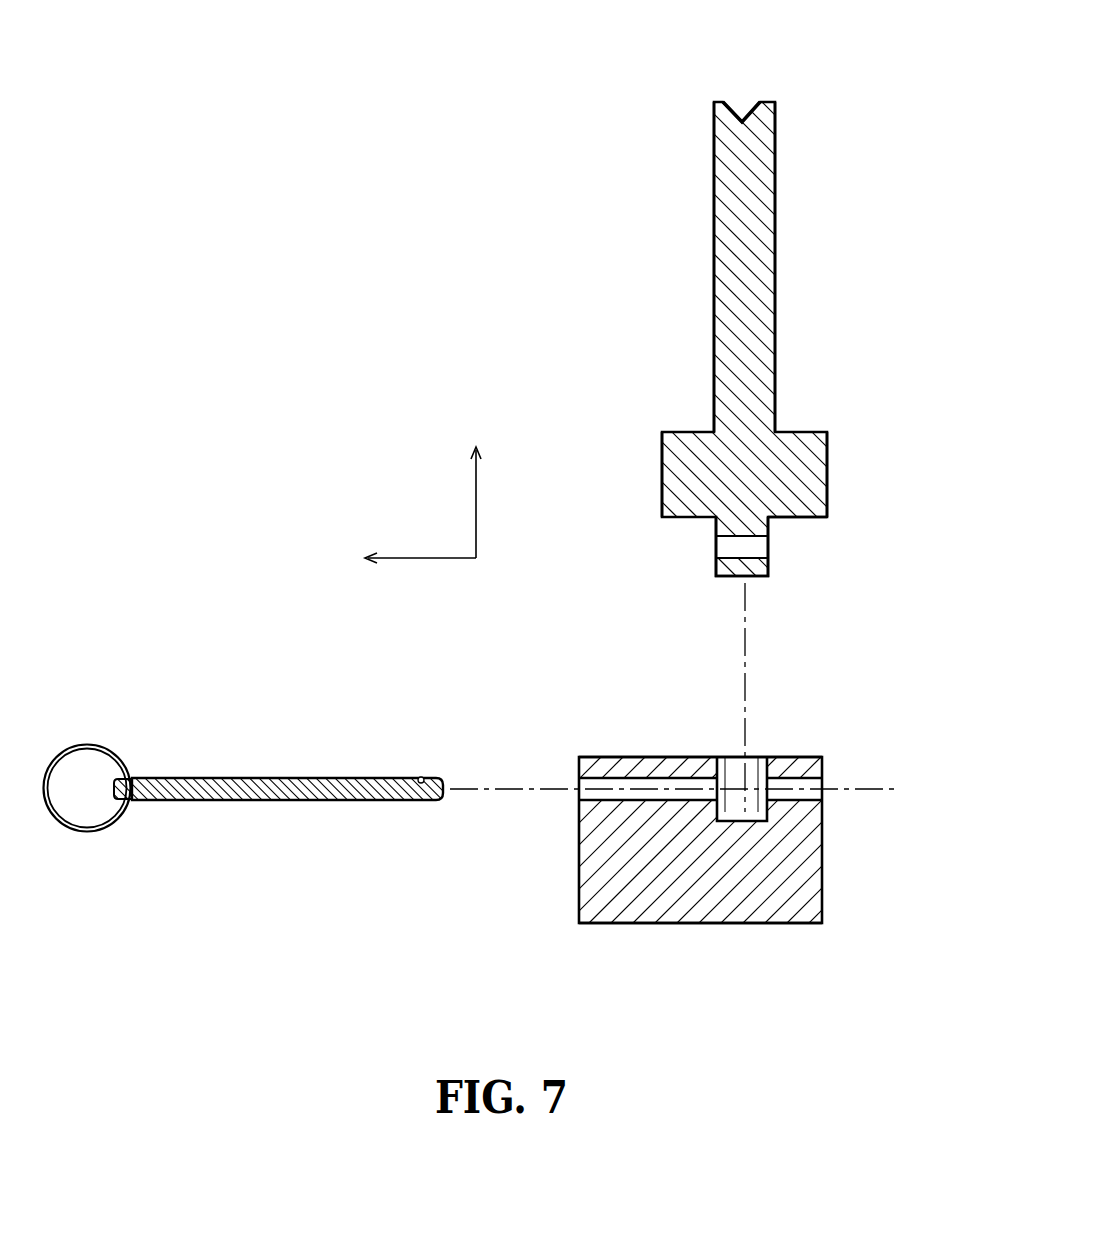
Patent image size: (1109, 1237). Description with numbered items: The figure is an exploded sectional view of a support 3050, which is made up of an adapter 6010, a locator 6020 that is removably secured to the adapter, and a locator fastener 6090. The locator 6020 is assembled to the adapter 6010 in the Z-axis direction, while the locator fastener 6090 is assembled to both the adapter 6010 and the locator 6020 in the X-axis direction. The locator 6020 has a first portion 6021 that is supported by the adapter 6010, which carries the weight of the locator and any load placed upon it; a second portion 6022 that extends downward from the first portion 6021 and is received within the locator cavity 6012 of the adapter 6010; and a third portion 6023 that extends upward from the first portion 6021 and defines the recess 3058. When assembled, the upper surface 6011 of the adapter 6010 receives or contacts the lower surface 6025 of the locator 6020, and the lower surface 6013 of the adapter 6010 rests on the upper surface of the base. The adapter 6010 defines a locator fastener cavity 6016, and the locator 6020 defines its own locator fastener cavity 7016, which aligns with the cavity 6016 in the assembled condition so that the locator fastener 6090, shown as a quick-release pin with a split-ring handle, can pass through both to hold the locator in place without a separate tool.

The support 3050 is at (263, 223).
The recess 3058 is at (739, 102).
The locator 6020 is at (803, 258).
The third portion 6023 is at (714, 292).
The first portion 6021 is at (662, 488).
The lower surface 6025 is at (798, 520).
The locator fastener cavity 7016 is at (755, 546).
The second portion 6022 is at (715, 565).
The adapter 6010 is at (840, 868).
The upper surface 6011 is at (682, 756).
The locator cavity 6012 is at (750, 767).
The locator fastener cavity 6016 is at (637, 787).
The lower surface 6013 is at (697, 923).
The locator fastener 6090 is at (295, 808).